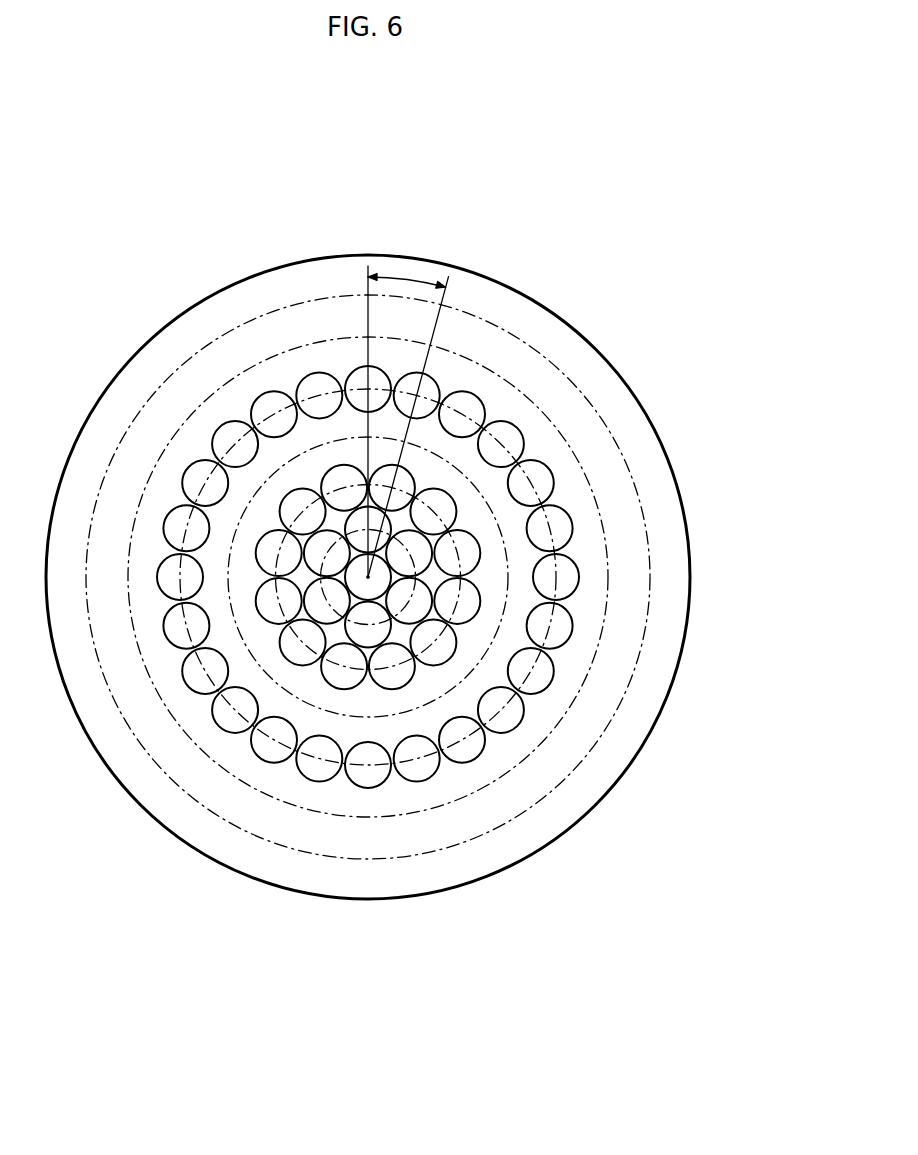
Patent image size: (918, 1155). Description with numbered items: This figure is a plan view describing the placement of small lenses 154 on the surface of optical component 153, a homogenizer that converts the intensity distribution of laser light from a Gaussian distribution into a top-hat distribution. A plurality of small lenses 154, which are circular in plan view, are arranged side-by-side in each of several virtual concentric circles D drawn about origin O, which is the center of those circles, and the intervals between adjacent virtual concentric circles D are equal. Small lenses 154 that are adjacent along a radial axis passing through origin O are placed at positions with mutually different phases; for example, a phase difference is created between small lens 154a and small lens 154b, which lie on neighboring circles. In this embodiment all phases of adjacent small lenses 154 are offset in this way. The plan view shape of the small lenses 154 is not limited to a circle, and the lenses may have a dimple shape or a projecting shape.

The optical component 153 is at (557, 318).
The small lenses 154 is at (572, 524).
The small lens 154a is at (368, 550).
The small lens 154b is at (348, 516).
The origin O is at (368, 577).
The virtual concentric circles D is at (503, 813).